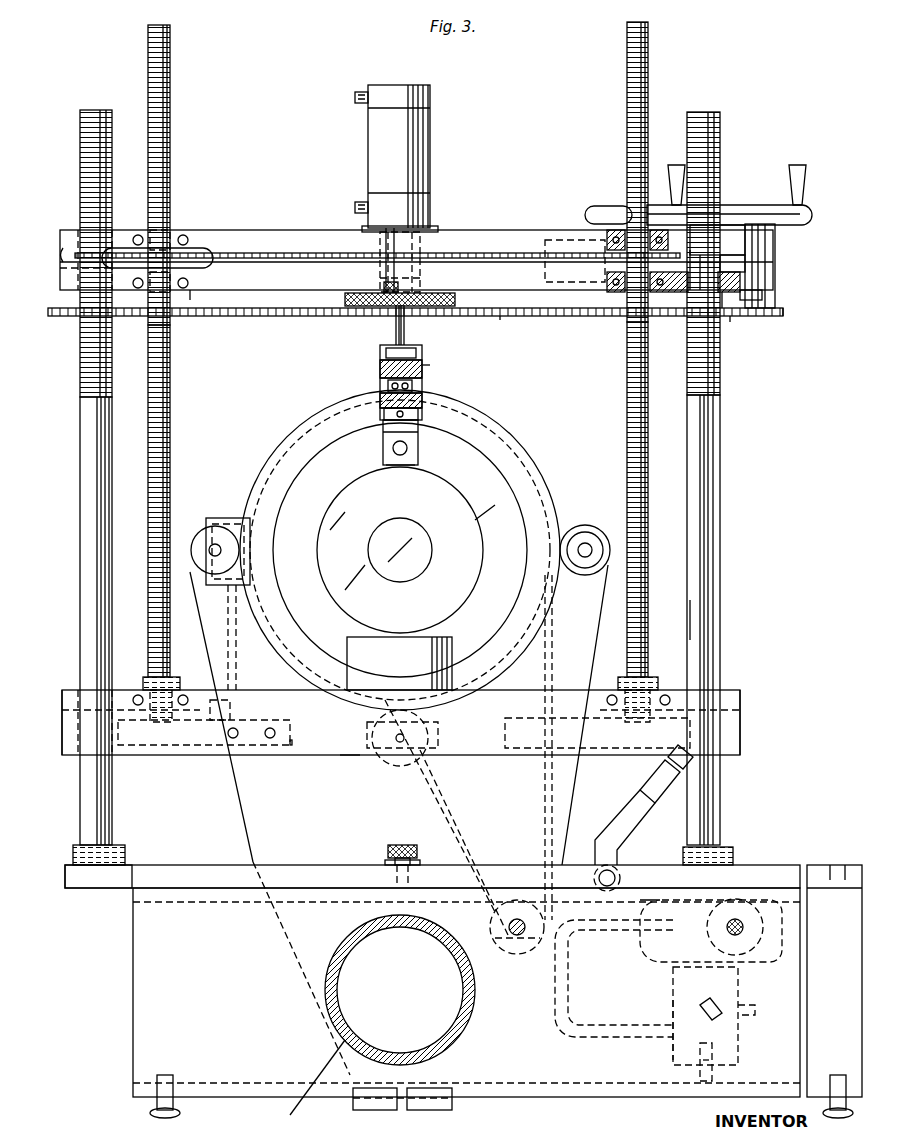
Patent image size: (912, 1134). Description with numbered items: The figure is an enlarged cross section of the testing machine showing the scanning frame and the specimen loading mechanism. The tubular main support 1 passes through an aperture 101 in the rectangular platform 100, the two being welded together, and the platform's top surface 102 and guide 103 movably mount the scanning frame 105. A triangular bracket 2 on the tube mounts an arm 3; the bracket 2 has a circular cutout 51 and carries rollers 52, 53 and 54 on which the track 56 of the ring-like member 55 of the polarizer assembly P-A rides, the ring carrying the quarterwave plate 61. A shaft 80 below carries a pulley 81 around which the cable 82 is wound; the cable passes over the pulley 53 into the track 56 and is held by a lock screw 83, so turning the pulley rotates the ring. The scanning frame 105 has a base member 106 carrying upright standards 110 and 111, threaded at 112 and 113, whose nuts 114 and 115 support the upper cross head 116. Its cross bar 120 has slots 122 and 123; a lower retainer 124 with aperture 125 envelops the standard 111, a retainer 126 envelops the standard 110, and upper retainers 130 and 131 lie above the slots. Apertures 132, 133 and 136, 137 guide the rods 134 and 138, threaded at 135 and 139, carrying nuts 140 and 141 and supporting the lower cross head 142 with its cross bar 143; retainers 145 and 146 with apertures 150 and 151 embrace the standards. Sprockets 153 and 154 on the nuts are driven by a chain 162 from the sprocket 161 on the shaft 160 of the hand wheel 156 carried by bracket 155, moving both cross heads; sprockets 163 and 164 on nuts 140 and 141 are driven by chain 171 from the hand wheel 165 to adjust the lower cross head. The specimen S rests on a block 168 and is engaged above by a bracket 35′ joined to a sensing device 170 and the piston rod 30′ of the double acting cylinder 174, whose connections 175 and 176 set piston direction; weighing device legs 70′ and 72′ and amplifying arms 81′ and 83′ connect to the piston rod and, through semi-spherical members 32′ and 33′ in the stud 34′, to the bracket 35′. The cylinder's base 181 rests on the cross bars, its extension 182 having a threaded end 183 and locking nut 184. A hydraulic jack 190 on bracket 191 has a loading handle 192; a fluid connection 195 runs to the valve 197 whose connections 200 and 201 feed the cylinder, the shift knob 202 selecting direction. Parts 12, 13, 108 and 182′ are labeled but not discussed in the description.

The main support 1 is at (311, 1086).
The bracket 2 is at (236, 795).
The arm 3 is at (165, 745).
The rod 12 is at (228, 518).
The roller bracket 13 is at (210, 518).
The piston rod 30′ is at (395, 328).
The semi-spherical member 32′ is at (388, 380).
The semi-spherical member 33′ is at (384, 420).
The stud 34′ is at (385, 428).
The bracket 35′ is at (408, 448).
The circular cutout 51 is at (535, 648).
The roller 52 is at (587, 525).
The roller 53 is at (400, 758).
The roller 54 is at (195, 544).
The ring-like member 55 is at (462, 408).
The track 56 is at (503, 416).
The quarterwave plate 61 is at (495, 490).
The leg section 70′ is at (385, 345).
The leg section 72′ is at (383, 435).
The shaft 80 is at (510, 925).
The pulley 81 is at (512, 945).
The amplifying arm 81′ is at (380, 362).
The cable 82 is at (465, 838).
The lock screw 83 is at (425, 368).
The amplifying arm 83′ is at (380, 396).
The platform 100 is at (133, 988).
The aperture 101 is at (350, 955).
The top surface 102 is at (227, 865).
The guide 103 is at (130, 888).
The scanning frame 105 is at (737, 619).
The base member 106 is at (72, 857).
The knob 108 is at (410, 845).
The upright standard 110 is at (84, 535).
The upright standard 111 is at (720, 512).
The threads 112 is at (90, 115).
The threads 113 is at (720, 130).
The nut 114 is at (65, 295).
The nut 115 is at (725, 300).
The upper cross head 116 is at (501, 223).
The cross bar 120 is at (308, 230).
The slot 122 is at (200, 263).
The slot 123 is at (605, 280).
The lower retainer 124 is at (745, 272).
The aperture 125 is at (762, 298).
The retainer 126 is at (190, 288).
The upper retainer 130 is at (607, 237).
The retainer 131 is at (185, 238).
The aperture 132 is at (655, 237).
The aperture 133 is at (645, 295).
The rod 134 is at (627, 422).
The threads 135 is at (627, 81).
The aperture 136 is at (145, 287).
The aperture 137 is at (163, 240).
The rod 138 is at (170, 423).
The threads 139 is at (170, 114).
The nut 140 is at (545, 268).
The nut 141 is at (148, 245).
The lower cross head 142 is at (352, 764).
The cross bar 143 is at (298, 748).
The retainer 145 is at (690, 715).
The retainer 146 is at (70, 730).
The aperture 150 is at (82, 692).
The aperture 151 is at (745, 703).
The sprocket 153 is at (58, 317).
The sprocket 154 is at (728, 320).
The bracket 155 is at (775, 256).
The hand wheel 156 is at (800, 206).
The rotatable shaft 160 is at (740, 290).
The sprocket 161 is at (783, 316).
The chain 162 is at (500, 316).
The sprocket 163 is at (688, 275).
The sprocket 164 is at (107, 258).
The hand wheel 165 is at (590, 215).
The block 168 is at (350, 637).
The sensing device 170 is at (432, 344).
The chain 171 is at (450, 253).
The cylinder 174 is at (430, 146).
The connection 175 is at (355, 97).
The connection 176 is at (355, 207).
The base 181 is at (425, 220).
The extension 182 is at (424, 268).
The coupling 182′ is at (424, 282).
The threaded portion 183 is at (384, 280).
The nut 184 is at (350, 304).
The hydraulic jack 190 is at (645, 948).
The bracket 191 is at (673, 972).
The loading handle 192 is at (670, 780).
The fluid connection 195 is at (760, 1004).
The valve 197 is at (673, 1010).
The connection 200 is at (705, 1060).
The connection 201 is at (710, 1080).
The shift knob 202 is at (722, 1016).
The specimen S is at (477, 550).
The polarizer assembly P-A is at (536, 440).